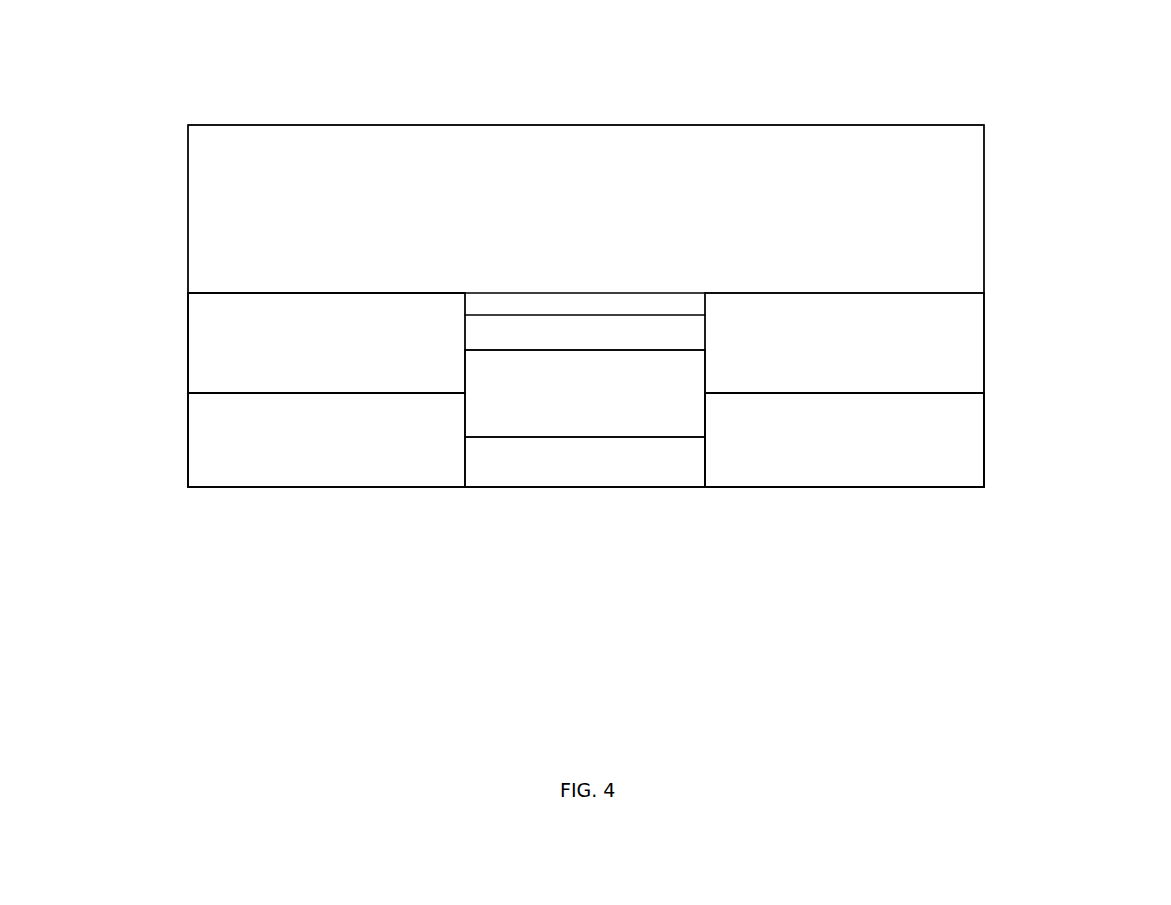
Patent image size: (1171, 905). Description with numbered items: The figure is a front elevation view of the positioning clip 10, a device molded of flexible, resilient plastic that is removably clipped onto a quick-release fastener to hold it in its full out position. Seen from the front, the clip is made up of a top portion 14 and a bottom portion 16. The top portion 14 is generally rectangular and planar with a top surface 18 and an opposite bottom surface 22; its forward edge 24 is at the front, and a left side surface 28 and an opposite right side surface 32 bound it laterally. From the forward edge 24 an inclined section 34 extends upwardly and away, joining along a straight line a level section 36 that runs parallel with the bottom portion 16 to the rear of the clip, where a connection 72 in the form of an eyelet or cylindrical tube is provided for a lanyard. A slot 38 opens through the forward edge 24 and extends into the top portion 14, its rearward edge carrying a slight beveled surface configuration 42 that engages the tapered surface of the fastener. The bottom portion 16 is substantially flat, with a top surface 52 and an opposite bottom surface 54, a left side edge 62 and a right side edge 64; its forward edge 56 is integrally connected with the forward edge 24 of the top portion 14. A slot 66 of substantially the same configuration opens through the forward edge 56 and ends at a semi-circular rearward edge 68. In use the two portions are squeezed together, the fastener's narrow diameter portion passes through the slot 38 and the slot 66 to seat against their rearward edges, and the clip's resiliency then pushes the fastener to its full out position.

The positioning clip 10 is at (1003, 109).
The connection for a lanyard 72 is at (363, 125).
The level section 36 is at (254, 296).
The inclined section 34 is at (225, 310).
The top surface 18 is at (202, 327).
The left side surface 28 is at (187, 363).
The forward edge 24 is at (213, 416).
The left side edge 62 is at (186, 472).
The forward edge 56 is at (345, 470).
The bottom surface 22 is at (528, 350).
The beveled surface configuration 42 is at (617, 350).
The top surface 52 is at (643, 437).
The rearward edge of the slot 68 is at (616, 473).
The bottom surface 54 is at (683, 487).
The slot 38 is at (543, 497).
The slot 66 is at (588, 507).
The top portion 14 is at (985, 325).
The right side surface 32 is at (983, 357).
The bottom portion 16 is at (985, 450).
The right side edge 64 is at (983, 473).